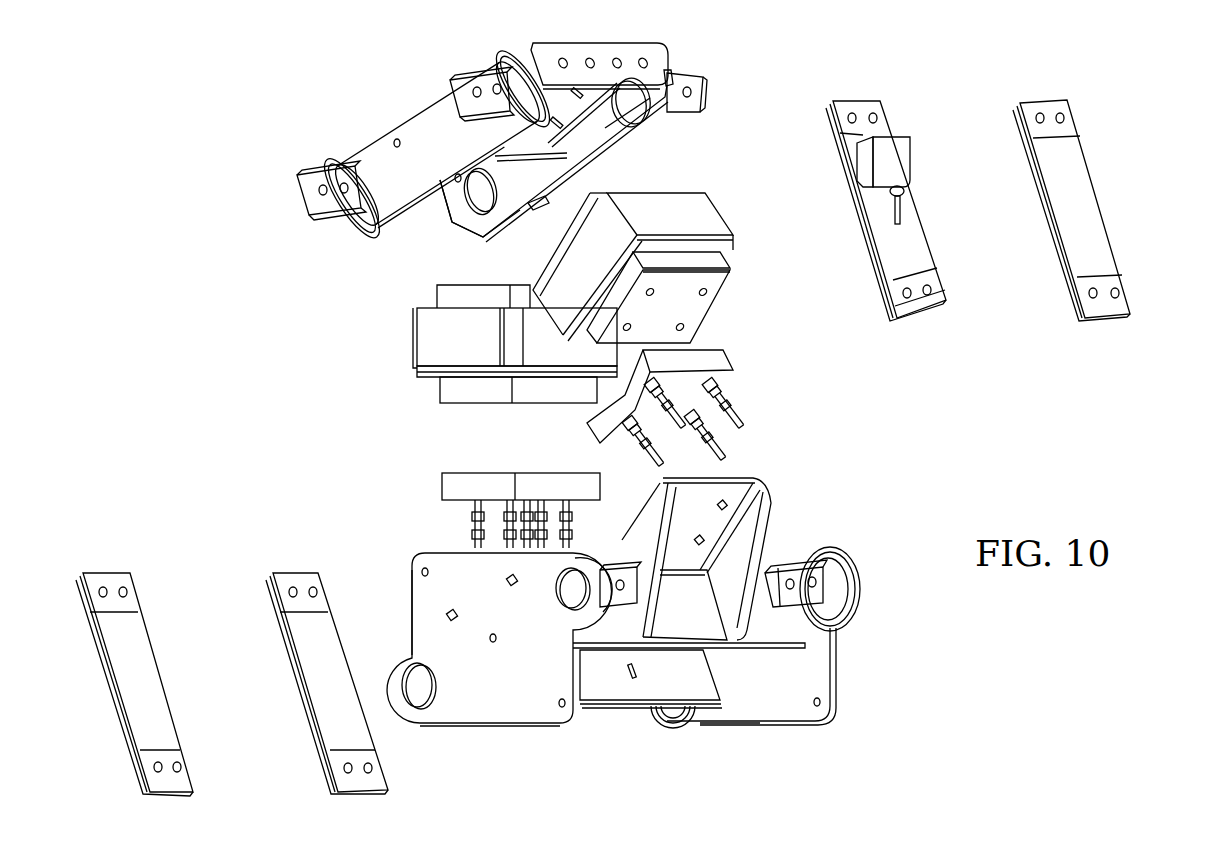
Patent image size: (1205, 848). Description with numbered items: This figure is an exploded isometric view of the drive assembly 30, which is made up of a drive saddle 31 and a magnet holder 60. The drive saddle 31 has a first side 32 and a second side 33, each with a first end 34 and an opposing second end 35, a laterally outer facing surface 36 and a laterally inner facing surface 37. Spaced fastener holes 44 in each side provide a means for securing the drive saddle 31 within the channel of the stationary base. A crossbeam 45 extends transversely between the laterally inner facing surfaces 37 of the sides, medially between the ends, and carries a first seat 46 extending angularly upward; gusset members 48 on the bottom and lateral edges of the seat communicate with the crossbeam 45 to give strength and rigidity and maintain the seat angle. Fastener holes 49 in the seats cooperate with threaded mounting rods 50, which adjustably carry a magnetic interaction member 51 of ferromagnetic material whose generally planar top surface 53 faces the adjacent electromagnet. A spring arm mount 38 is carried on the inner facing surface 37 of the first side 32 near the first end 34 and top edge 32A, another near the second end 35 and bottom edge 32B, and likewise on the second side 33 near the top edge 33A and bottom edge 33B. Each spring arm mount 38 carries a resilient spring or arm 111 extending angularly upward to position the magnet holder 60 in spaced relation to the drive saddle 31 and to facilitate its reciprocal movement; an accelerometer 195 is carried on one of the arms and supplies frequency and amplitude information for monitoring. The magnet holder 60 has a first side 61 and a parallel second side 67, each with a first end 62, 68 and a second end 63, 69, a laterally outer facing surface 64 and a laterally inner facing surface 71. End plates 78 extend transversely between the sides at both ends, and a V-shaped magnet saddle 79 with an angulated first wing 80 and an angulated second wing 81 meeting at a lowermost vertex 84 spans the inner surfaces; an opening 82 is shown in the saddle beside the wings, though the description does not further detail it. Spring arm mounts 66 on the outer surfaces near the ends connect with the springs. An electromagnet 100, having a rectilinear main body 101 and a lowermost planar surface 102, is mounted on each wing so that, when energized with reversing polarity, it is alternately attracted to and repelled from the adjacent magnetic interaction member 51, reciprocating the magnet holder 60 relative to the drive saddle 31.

The drive assembly 30 is at (772, 548).
The drive saddle 31 is at (878, 596).
The first side 32 is at (478, 720).
The top edge 32A is at (448, 562).
The bottom edge 32B is at (497, 727).
The second side 33 is at (838, 708).
The top edge 33A is at (830, 545).
The bottom edge 33B is at (728, 727).
The first end 34 is at (838, 660).
The second end 35 is at (410, 607).
The laterally outer facing surface 36 is at (528, 696).
The laterally inner facing surface 37 is at (768, 714).
The spring arm mount 38 is at (612, 565).
The fastener holes 44 is at (519, 578).
The crossbeam 45 is at (772, 652).
The first seat 46 is at (735, 478).
The gusset members 48 is at (725, 580).
The fastener holes 49 is at (725, 505).
The mounting rods 50 is at (745, 410).
The magnetic interaction member 51 is at (738, 355).
The top surface 53 is at (492, 470).
The magnet holder 60 is at (395, 54).
The first side 61 is at (435, 112).
The first end 62 is at (572, 96).
The second end 63 is at (338, 228).
The laterally outer facing surface 64 is at (400, 145).
The spring arm mount 66 is at (330, 172).
The second side 67 is at (640, 128).
The first end 68 is at (683, 78).
The second end 69 is at (475, 240).
The laterally inner facing surface 71 is at (540, 207).
The end plates 78 is at (640, 50).
The magnet saddle 79 is at (585, 170).
The angulated first wing 80 is at (597, 140).
The angulated second wing 81 is at (498, 185).
The aperture 82 is at (628, 105).
The vertex 84 is at (513, 155).
The electromagnet 100 is at (700, 188).
The main body 101 is at (688, 218).
The planar surface 102 is at (688, 319).
The resilient spring or arm 111 is at (335, 720).
The accelerometer 195 is at (897, 150).